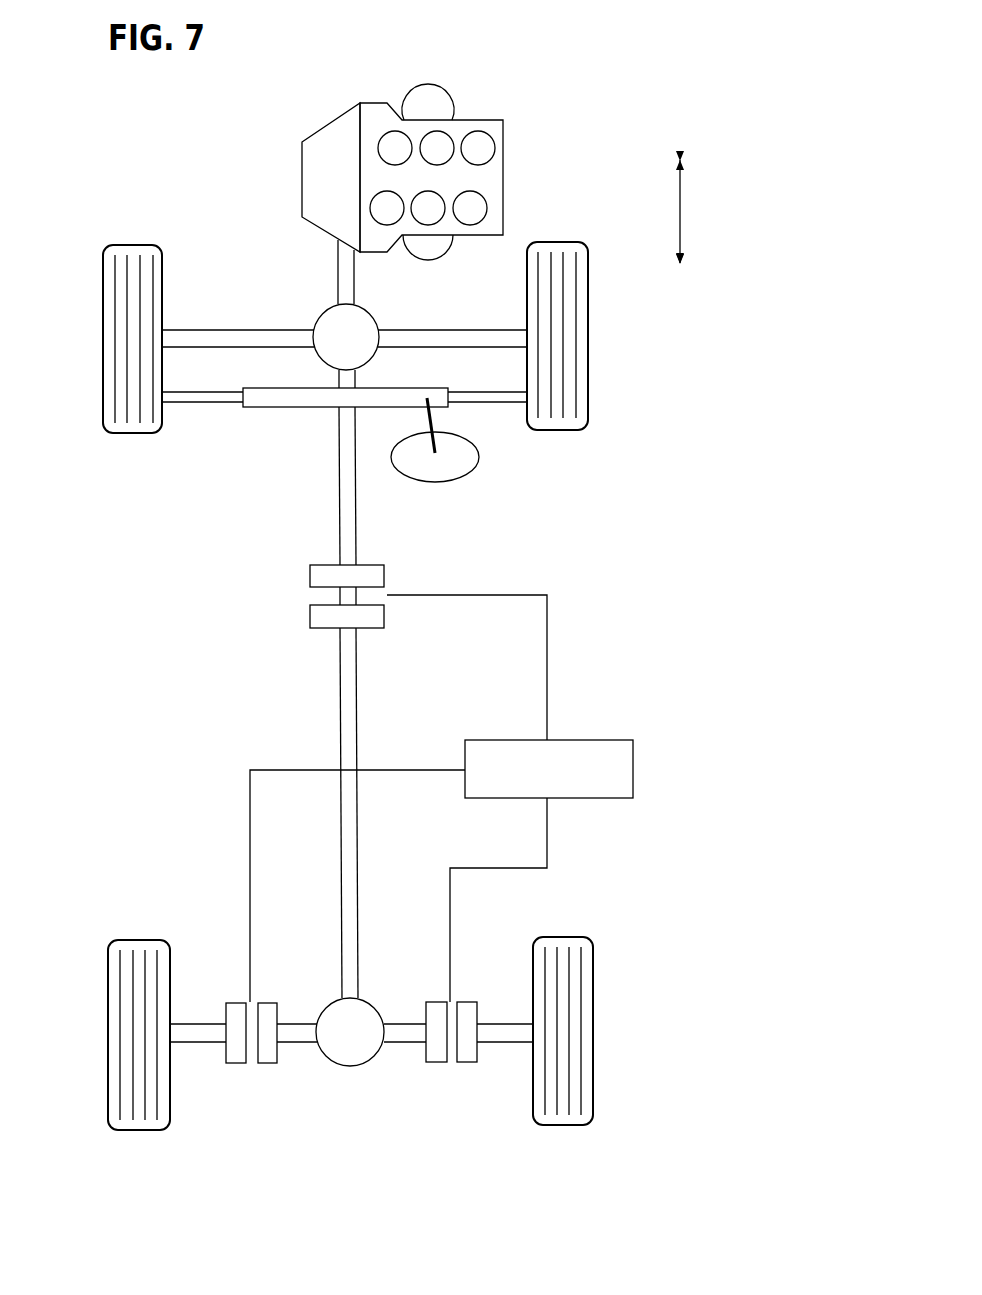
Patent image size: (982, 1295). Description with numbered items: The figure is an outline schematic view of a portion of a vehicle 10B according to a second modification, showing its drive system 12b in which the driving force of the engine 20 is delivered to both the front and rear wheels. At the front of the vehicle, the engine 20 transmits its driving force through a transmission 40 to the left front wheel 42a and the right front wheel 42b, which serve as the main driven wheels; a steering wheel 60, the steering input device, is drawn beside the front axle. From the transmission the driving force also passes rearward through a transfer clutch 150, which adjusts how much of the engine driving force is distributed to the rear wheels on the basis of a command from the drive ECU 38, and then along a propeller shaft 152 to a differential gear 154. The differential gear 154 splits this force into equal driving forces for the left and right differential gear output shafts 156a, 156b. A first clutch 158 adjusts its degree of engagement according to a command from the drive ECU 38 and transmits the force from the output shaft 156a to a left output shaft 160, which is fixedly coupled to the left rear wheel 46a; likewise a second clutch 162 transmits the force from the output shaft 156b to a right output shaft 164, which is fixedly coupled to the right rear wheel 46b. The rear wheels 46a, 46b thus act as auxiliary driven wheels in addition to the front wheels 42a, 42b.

The vehicle 10B is at (133, 105).
The drive system 12b is at (310, 108).
The engine 20 is at (480, 118).
The transmission 40 is at (315, 183).
The left front wheel 42a is at (113, 363).
The right front wheel 42b is at (578, 360).
The steering wheel 60 is at (417, 468).
The transfer clutch 150 is at (292, 562).
The propeller shaft 152 is at (352, 701).
The drive ECU 38 is at (605, 747).
The left rear wheel 46a is at (108, 1014).
The right rear wheel 46b is at (593, 1010).
The differential gear 154 is at (370, 1013).
The differential gear output shaft 156a is at (308, 1038).
The differential gear output shaft 156b is at (395, 1040).
The first clutch 158 is at (218, 1072).
The left output shaft 160 is at (200, 1033).
The second clutch 162 is at (482, 1072).
The right output shaft 164 is at (502, 1030).